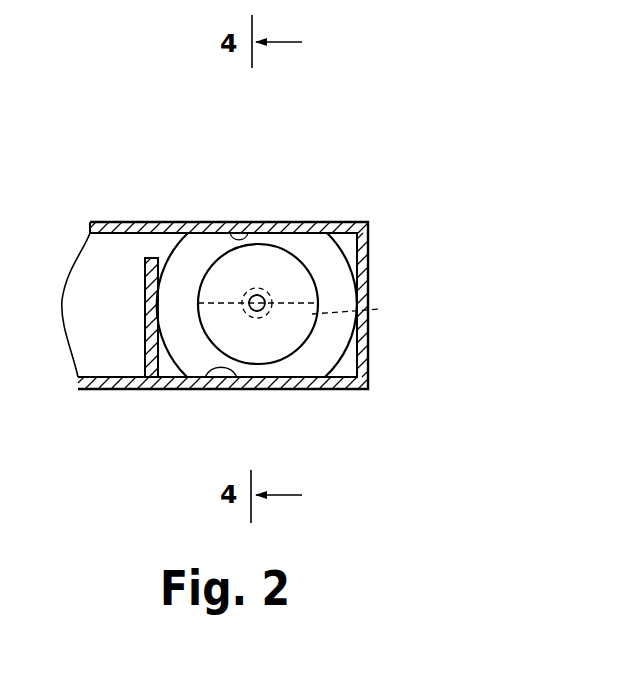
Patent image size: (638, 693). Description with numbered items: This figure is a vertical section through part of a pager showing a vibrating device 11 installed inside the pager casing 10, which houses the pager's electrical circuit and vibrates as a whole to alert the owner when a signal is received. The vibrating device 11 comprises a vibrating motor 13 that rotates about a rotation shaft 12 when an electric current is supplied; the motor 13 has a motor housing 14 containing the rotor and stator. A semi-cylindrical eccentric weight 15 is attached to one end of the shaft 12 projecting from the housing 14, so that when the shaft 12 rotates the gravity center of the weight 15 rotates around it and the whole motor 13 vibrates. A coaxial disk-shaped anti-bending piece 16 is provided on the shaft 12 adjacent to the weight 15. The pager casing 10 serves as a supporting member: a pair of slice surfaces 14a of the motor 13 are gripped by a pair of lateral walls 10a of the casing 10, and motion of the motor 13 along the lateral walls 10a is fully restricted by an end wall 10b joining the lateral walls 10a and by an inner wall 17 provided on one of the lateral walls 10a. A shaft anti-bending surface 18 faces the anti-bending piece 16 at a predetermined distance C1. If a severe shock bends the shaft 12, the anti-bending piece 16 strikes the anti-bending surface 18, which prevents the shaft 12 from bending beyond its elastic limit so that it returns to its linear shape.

The pager casing 10 is at (159, 221).
The lateral walls 10a is at (200, 224).
The end wall 10b is at (369, 295).
The vibrating device 11 is at (164, 249).
The rotation shaft 12 is at (254, 311).
The vibrating motor 13 is at (304, 242).
The motor housing 14 is at (345, 255).
The slice surfaces 14a is at (320, 222).
The eccentric weight 15 is at (368, 313).
The anti-bending piece 16 is at (257, 244).
The inner wall 17 is at (147, 332).
The shaft anti-bending surface 18 is at (229, 237).
The predetermined distance C1 is at (270, 240).